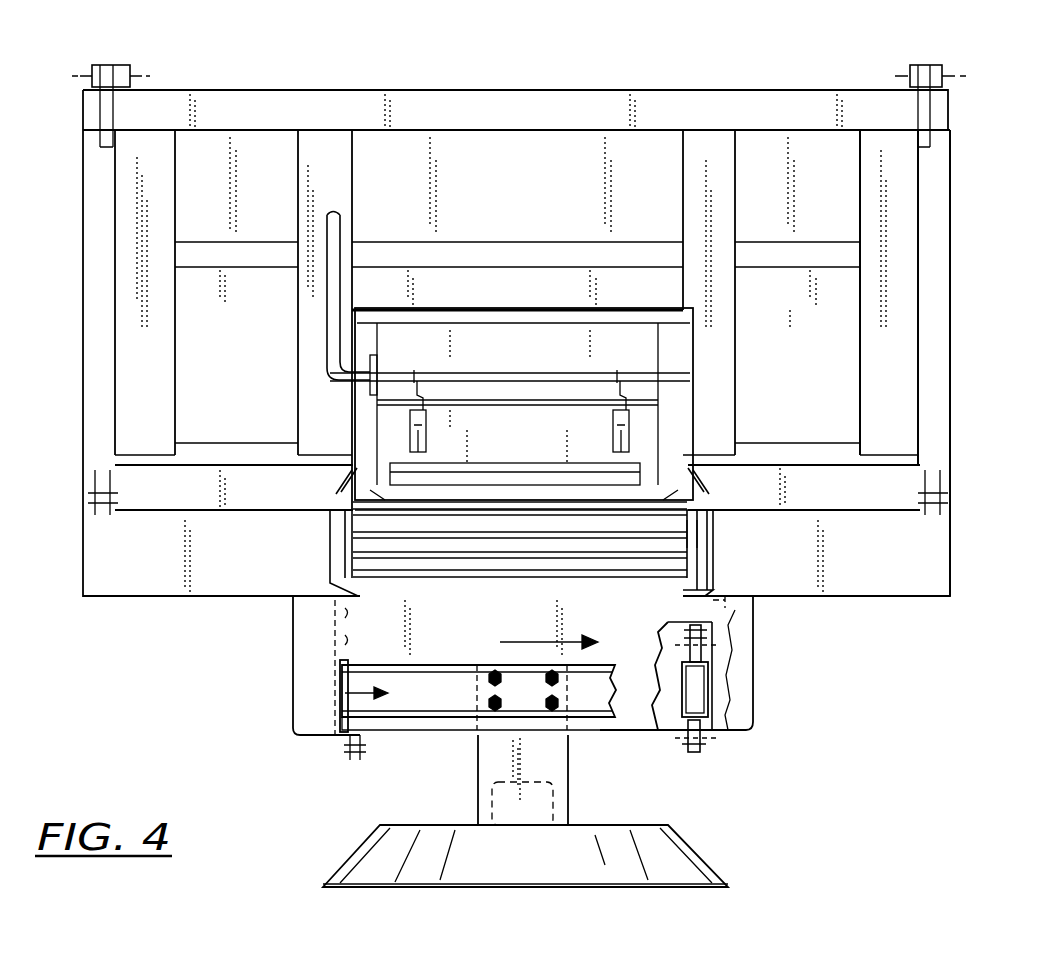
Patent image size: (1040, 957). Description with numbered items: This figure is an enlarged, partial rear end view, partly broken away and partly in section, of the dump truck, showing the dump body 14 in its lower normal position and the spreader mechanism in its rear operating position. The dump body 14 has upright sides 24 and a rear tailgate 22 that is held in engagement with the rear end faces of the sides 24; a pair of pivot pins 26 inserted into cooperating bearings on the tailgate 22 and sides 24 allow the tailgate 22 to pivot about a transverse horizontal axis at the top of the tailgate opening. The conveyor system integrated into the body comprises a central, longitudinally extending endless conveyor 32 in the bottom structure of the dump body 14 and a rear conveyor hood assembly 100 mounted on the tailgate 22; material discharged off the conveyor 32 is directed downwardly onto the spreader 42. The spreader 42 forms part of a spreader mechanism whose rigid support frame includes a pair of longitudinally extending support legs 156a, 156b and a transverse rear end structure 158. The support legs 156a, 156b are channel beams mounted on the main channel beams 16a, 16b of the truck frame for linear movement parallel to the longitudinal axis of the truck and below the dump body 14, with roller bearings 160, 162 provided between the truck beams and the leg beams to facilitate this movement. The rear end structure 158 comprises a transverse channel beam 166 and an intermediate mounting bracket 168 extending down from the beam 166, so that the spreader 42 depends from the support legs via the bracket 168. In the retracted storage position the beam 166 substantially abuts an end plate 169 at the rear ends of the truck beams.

The dump body 14 is at (663, 86).
The pivot pins 26 is at (943, 74).
The rear tailgate 22 is at (900, 165).
The upright sides 24 is at (933, 222).
The endless conveyor 32 is at (696, 533).
The rear conveyor hood assembly 100 is at (715, 566).
The main channel beam 16a is at (345, 622).
The main channel beam 16b is at (718, 695).
The support leg 156a is at (342, 660).
The support leg 156b is at (700, 662).
The transverse rear end structure 158 is at (342, 705).
The roller bearing 160 is at (720, 622).
The roller bearing 162 is at (700, 752).
The transverse channel beam 166 is at (418, 705).
The mounting bracket 168 is at (572, 782).
The end plate 169 is at (463, 626).
The spreader 42 is at (697, 847).